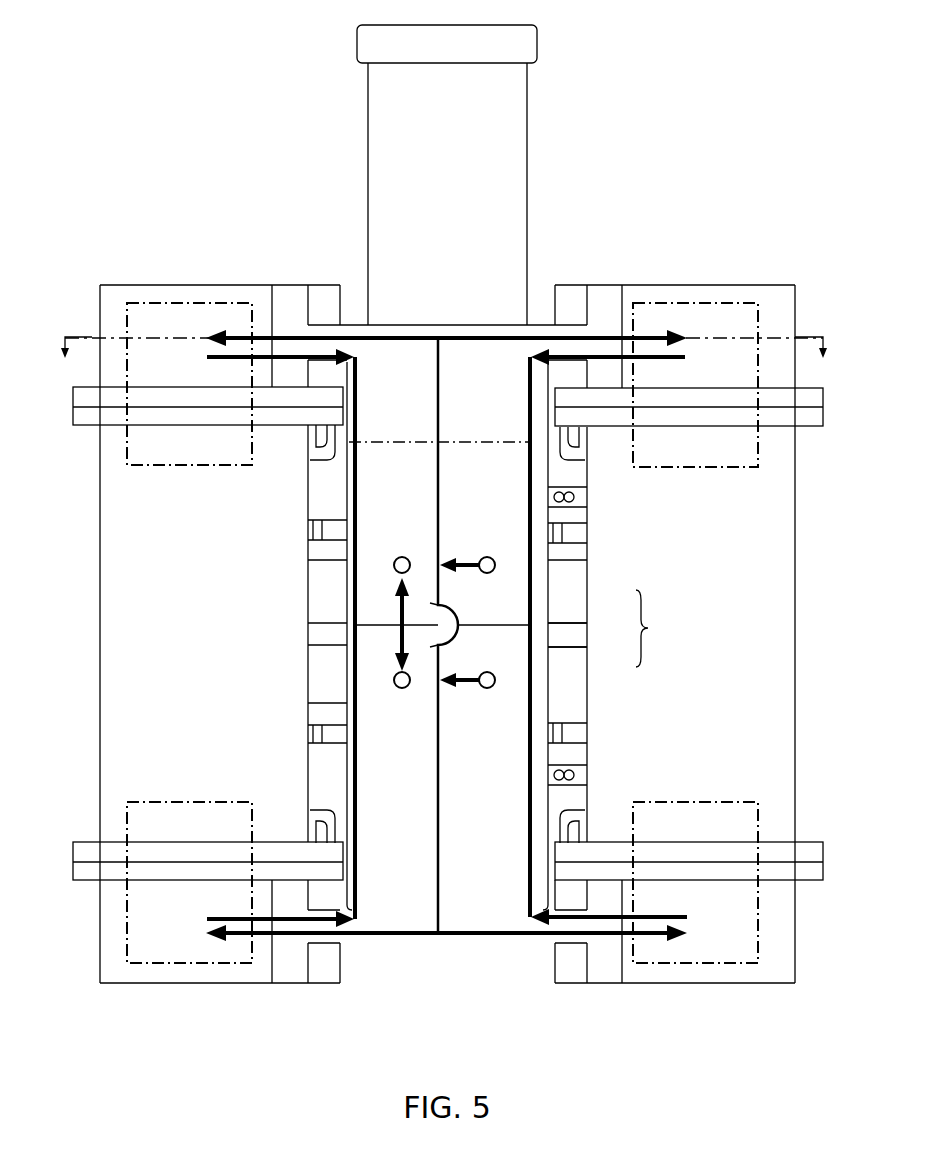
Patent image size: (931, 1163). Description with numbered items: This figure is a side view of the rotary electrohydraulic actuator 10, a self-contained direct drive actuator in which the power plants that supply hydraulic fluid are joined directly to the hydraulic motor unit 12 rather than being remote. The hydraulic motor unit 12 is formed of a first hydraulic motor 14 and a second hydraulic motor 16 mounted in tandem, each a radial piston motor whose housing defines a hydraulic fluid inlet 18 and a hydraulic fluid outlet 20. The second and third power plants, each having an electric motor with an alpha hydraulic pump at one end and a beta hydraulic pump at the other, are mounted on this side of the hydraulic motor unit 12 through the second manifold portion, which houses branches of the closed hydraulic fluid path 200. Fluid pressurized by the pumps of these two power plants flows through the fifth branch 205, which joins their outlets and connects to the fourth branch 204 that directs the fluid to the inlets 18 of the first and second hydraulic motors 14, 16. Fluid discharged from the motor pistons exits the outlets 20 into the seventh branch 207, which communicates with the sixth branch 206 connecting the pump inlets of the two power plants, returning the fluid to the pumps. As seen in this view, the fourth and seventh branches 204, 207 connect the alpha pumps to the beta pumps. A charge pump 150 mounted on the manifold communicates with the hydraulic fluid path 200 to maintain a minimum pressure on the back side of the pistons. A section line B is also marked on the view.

The rotary electrohydraulic actuator 10 is at (224, 46).
The charge pump 150 is at (430, 201).
The hydraulic fluid path 200 is at (313, 325).
The fifth branch 205 is at (284, 352).
The sixth branch 206 is at (571, 325).
The seventh branch 207 is at (436, 470).
The fourth branch 204 is at (477, 622).
The hydraulic fluid inlet 18 is at (399, 556).
The hydraulic fluid outlet 20 is at (488, 556).
The hydraulic motor unit 12 is at (656, 628).
The first hydraulic motor 14 is at (583, 658).
The second hydraulic motor 16 is at (583, 603).
The section line B is at (435, 348).